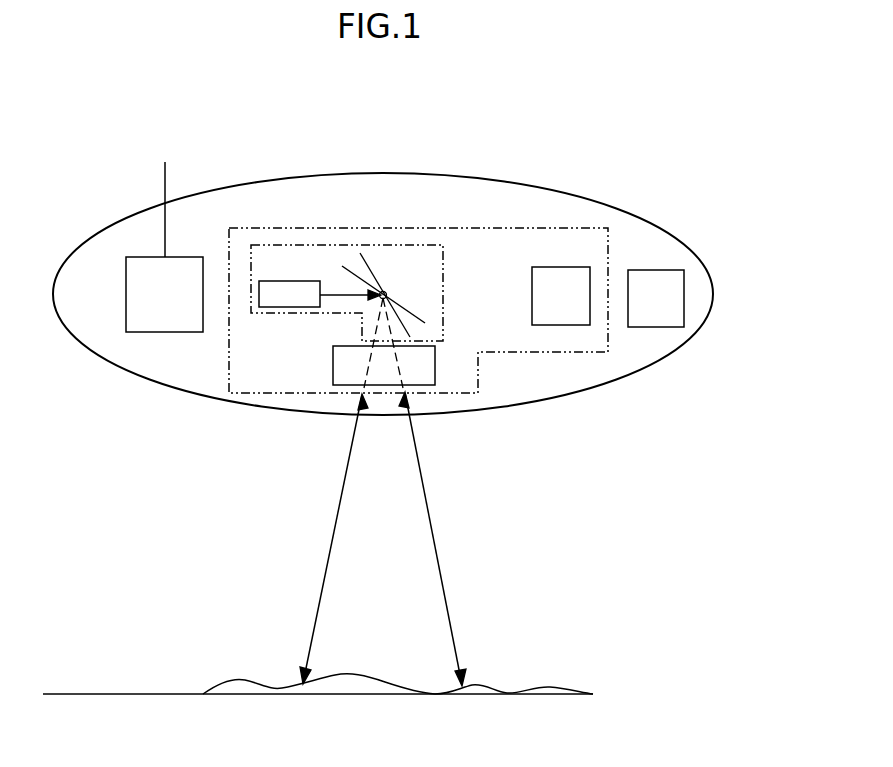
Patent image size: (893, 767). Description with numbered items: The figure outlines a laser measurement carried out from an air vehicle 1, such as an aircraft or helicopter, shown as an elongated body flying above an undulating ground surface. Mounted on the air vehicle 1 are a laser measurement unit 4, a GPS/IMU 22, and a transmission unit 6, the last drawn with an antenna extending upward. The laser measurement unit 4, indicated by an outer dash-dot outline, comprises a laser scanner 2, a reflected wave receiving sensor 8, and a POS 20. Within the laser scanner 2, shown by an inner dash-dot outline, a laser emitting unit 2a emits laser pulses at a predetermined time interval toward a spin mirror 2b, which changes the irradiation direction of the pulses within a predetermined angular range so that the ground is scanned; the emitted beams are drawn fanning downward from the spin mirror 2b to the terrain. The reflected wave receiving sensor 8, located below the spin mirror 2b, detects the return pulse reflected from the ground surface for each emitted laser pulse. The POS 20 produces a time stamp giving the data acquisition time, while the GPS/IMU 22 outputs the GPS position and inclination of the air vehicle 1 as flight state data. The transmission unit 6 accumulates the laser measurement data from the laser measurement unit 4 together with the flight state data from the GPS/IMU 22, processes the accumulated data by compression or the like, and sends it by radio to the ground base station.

The air vehicle 1 is at (648, 210).
The laser scanner 2 is at (422, 257).
The laser emitting unit 2a is at (300, 291).
The spin mirror 2b is at (370, 265).
The laser measurement unit 4 is at (488, 340).
The transmission unit 6 is at (144, 320).
The reflected wave receiving sensor 8 is at (342, 377).
The POS (Position Orientation System) 20 is at (592, 323).
The GPS/IMU 22 is at (684, 292).